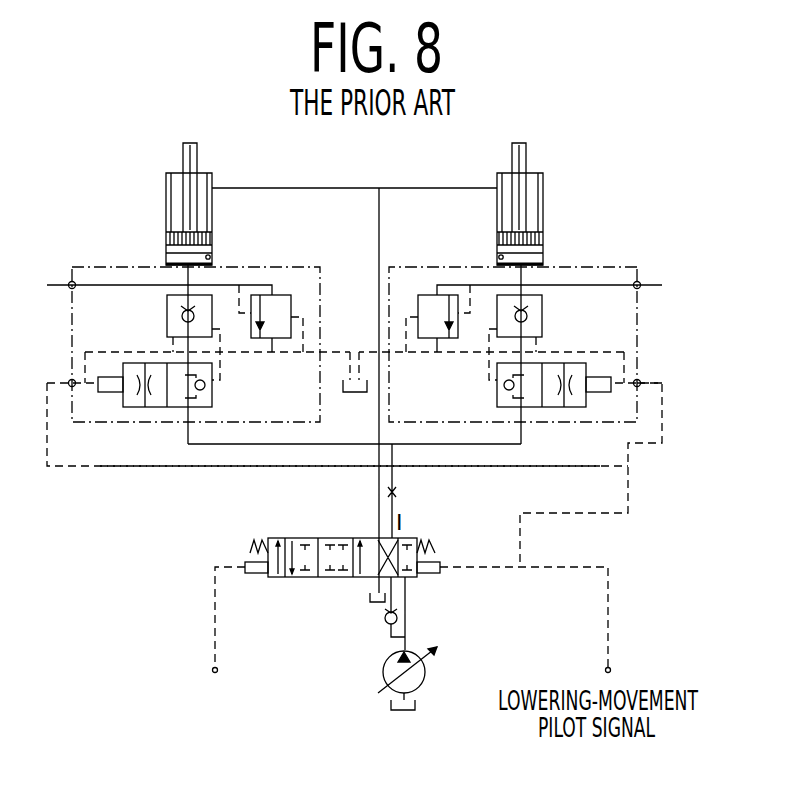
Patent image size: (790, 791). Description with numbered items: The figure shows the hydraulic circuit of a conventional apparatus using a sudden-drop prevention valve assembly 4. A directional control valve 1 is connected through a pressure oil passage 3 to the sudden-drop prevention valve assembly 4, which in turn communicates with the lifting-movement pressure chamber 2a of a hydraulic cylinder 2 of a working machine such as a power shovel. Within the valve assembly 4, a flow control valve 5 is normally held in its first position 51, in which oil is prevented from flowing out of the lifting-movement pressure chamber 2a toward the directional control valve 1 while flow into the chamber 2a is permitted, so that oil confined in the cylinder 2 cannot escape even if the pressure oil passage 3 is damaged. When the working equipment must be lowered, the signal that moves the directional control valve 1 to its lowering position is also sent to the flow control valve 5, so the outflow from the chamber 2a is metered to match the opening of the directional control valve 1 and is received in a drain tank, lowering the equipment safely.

The directional control valve 1 is at (268, 538).
The hydraulic cylinder 2 is at (166, 213).
The lifting-movement pressure chamber 2a is at (211, 257).
The pressure oil passage 3 is at (343, 447).
The sudden-drop prevention valve assembly 4 is at (72, 267).
The flow control valve 5 is at (137, 363).
The first position 51 is at (212, 368).